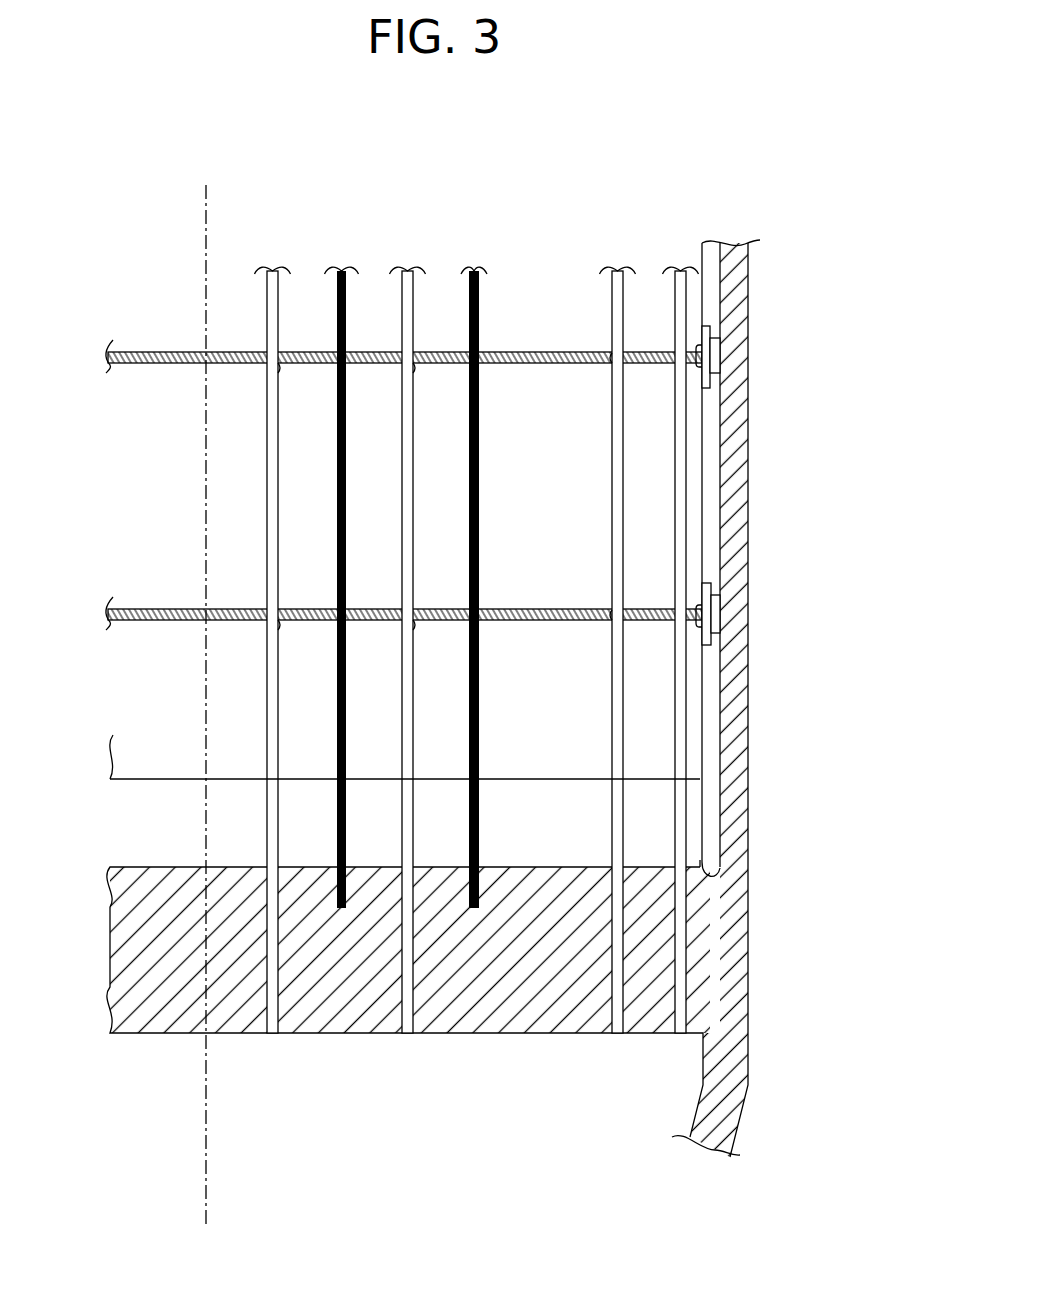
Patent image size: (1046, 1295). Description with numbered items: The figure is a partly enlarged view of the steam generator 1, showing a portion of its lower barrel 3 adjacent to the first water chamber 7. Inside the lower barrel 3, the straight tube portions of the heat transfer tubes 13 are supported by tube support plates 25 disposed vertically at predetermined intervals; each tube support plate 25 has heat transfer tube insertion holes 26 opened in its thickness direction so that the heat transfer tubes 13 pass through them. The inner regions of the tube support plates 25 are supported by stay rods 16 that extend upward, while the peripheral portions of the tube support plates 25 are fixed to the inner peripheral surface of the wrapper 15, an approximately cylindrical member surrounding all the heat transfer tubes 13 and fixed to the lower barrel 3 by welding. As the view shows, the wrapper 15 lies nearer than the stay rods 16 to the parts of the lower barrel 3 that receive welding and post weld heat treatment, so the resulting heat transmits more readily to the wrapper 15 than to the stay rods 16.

The steam generator 1 is at (800, 214).
The lower barrel 3 is at (742, 495).
The first water chamber 7 is at (695, 1115).
The heat transfer tubes 13 is at (268, 492).
The wrapper 15 is at (703, 697).
The stay rods 16 is at (337, 503).
The tube support plates 25 is at (523, 350).
The heat transfer tube insertion holes 26 is at (270, 368).